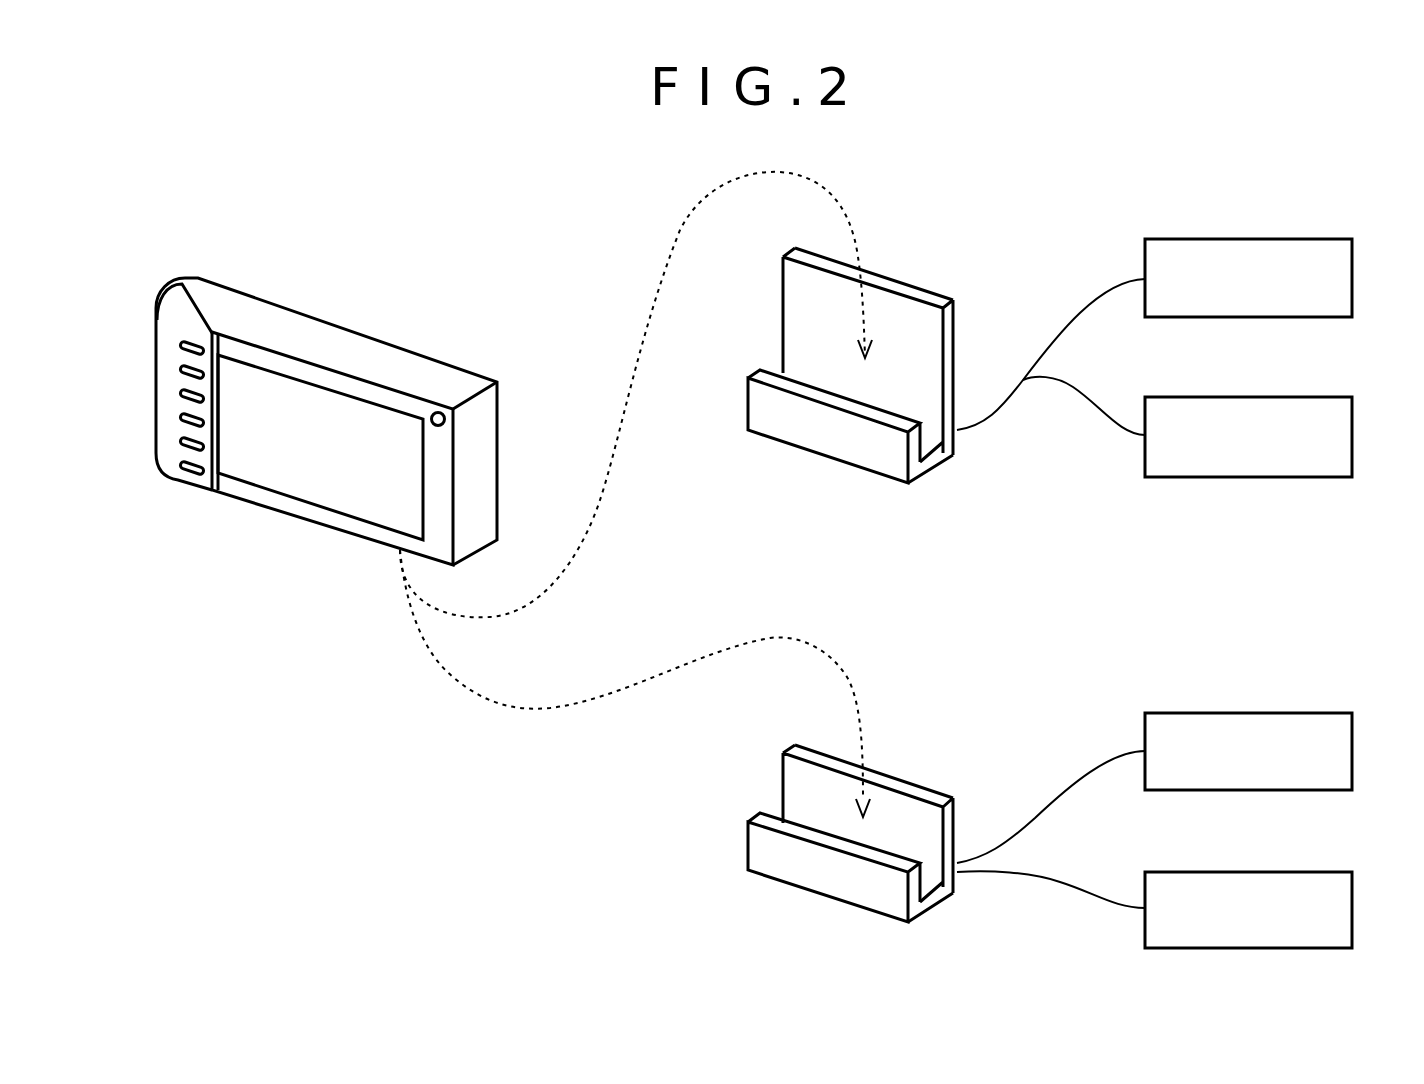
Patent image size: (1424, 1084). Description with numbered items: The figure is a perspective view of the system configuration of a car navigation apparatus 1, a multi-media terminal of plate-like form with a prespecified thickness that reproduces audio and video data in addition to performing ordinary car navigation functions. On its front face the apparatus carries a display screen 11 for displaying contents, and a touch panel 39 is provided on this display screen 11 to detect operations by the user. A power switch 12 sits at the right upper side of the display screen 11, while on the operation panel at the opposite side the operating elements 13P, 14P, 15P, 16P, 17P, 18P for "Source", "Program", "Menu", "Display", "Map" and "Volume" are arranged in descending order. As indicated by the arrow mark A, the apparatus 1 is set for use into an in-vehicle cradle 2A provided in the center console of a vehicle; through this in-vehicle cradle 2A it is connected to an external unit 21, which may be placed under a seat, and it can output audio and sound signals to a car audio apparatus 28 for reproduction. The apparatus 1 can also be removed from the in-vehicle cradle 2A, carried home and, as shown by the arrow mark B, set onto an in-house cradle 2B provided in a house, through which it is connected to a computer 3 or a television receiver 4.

The car navigation apparatus 1 is at (403, 359).
The display screen 11 is at (308, 399).
The power switch 12 is at (445, 418).
The operating element 13P is at (180, 344).
The operating element 14P is at (180, 368).
The operating element 15P is at (180, 392).
The operating element 16P is at (180, 416).
The operating element 17P is at (180, 440).
The operating element 18P is at (180, 464).
The touch panel 39 is at (305, 490).
The in-vehicle cradle 2A is at (912, 313).
The in-house cradle 2B is at (912, 812).
The external unit 21 is at (1352, 263).
The car audio apparatus 28 is at (1352, 421).
The television receiver 4 is at (1352, 739).
The computer 3 is at (1352, 897).
The arrow mark A is at (841, 204).
The arrow mark B is at (811, 641).